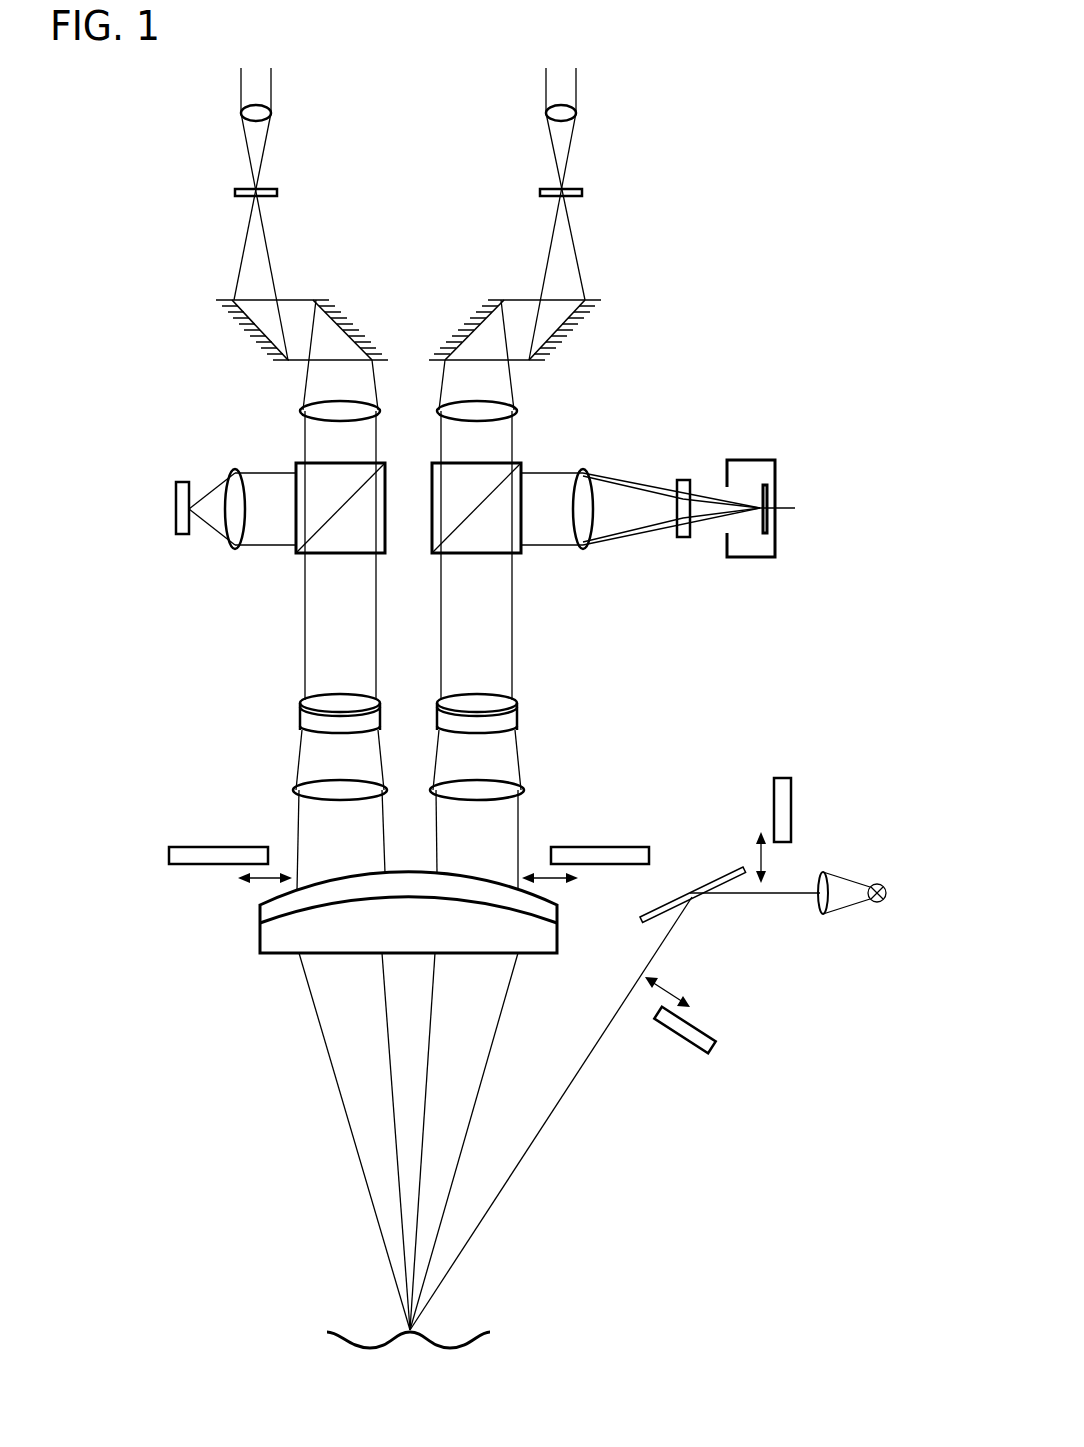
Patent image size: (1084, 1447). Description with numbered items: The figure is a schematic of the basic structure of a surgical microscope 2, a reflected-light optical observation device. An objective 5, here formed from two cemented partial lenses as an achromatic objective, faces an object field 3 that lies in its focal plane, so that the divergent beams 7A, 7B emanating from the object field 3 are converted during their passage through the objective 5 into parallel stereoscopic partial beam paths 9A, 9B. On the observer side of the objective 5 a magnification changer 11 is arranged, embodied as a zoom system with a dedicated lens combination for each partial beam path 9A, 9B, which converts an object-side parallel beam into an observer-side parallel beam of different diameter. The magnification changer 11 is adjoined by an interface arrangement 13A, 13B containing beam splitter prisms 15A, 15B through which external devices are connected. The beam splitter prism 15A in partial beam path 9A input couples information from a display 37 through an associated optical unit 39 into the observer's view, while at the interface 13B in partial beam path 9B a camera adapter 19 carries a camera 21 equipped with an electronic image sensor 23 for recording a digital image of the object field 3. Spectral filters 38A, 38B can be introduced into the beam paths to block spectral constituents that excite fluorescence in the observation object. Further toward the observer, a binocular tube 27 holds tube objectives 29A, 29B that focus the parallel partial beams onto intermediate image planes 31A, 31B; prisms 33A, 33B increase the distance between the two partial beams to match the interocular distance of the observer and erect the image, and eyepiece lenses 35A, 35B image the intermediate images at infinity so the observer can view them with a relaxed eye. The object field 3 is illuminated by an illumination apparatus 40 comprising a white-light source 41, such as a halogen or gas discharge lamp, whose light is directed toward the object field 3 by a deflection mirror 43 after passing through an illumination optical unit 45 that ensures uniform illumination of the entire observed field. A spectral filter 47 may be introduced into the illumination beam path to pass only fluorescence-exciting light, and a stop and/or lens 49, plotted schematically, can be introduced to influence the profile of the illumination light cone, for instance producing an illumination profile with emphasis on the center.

The surgical microscope 2 is at (692, 308).
The object field 3 is at (425, 1328).
The objective 5 is at (237, 868).
The divergent beam 7A is at (336, 1088).
The divergent beam 7B is at (503, 1017).
The stereoscopic partial beam path 9A is at (297, 830).
The stereoscopic partial beam path 9B is at (520, 828).
The magnification changer 11 is at (260, 693).
The interface arrangement 13A is at (325, 556).
The interface arrangement 13B is at (497, 556).
The beam splitter prism 15A is at (390, 545).
The beam splitter prism 15B is at (428, 497).
The camera adapter 19 is at (693, 445).
The camera 21 is at (750, 460).
The image sensor 23 is at (770, 500).
The binocular tube 27 is at (202, 65).
The tube objective 29A is at (302, 411).
The tube objective 29B is at (517, 411).
The intermediate image plane 31A is at (277, 192).
The intermediate image plane 31B is at (582, 192).
The prism 33A is at (303, 280).
The prism 33B is at (514, 280).
The eyepiece lens 35A is at (271, 115).
The eyepiece lens 35B is at (577, 115).
The display 37 is at (176, 505).
The spectral filter 38A is at (193, 847).
The spectral filter 38B is at (627, 847).
The optical unit 39 is at (236, 470).
The illumination apparatus 40 is at (682, 1003).
The white-light source 41 is at (887, 892).
The deflection mirror 43 is at (708, 873).
The illumination optical unit 45 is at (860, 877).
The spectral filter 47 is at (702, 1028).
The stop and/or lens 49 is at (792, 795).